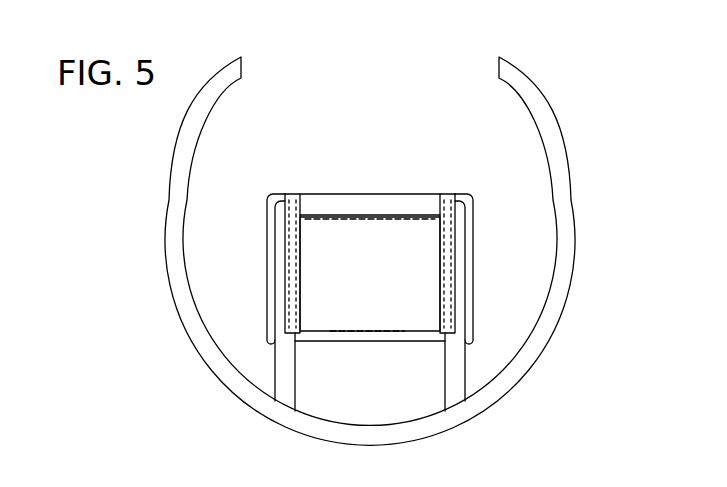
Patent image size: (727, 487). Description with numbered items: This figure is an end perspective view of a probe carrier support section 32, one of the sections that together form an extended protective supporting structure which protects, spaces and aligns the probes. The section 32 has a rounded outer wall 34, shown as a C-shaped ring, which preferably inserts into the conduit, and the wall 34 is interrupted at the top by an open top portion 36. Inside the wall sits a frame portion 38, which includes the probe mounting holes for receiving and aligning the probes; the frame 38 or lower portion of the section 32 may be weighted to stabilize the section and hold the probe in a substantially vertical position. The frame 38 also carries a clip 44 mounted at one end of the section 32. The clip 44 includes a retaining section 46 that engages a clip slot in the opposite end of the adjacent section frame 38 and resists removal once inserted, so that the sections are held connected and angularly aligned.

The probe carrier support section 32 is at (216, 71).
The rounded outer wall 34 is at (165, 264).
The open top portion 36 is at (405, 66).
The frame portion 38 is at (272, 365).
The clip 44 is at (348, 192).
The retaining section 46 is at (378, 278).